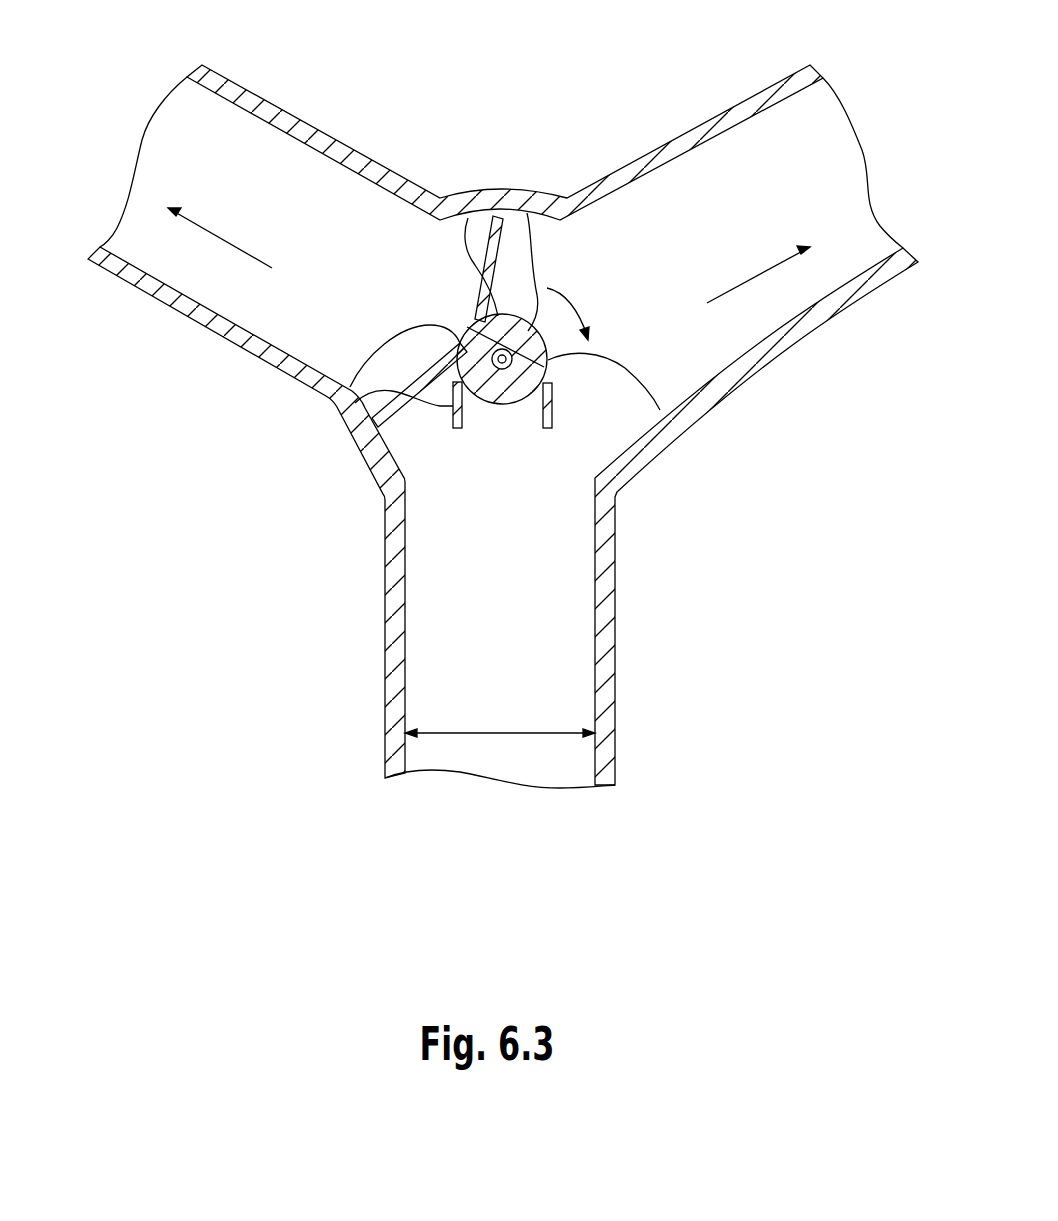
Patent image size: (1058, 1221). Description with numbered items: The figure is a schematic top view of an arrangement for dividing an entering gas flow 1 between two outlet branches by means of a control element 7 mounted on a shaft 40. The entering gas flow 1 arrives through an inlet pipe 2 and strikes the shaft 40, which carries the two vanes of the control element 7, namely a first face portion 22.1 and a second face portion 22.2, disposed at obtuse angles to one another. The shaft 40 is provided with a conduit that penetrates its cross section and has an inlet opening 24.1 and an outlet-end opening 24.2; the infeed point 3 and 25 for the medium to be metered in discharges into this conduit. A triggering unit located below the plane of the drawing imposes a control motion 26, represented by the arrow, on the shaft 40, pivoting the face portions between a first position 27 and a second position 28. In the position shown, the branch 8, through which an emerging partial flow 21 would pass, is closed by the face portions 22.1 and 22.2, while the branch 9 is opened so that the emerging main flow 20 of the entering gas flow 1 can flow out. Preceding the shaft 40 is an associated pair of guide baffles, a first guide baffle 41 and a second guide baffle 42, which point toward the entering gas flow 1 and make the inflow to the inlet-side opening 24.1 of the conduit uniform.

The entering gas flow 1 is at (513, 809).
The inlet pipe 2 is at (471, 735).
The infeed point 3 is at (541, 190).
The infeed point 25 is at (541, 190).
The control element 7 is at (452, 302).
The branch 8 is at (200, 130).
The branch 9 is at (708, 175).
The emerging main flow 20 is at (773, 270).
The emerging partial flow 21 is at (221, 242).
The first face portion 22.1 is at (372, 419).
The second face portion 22.2 is at (489, 195).
The inlet opening 24.1 is at (673, 410).
The outlet-end opening 24.2 is at (330, 403).
The control motion 26 is at (587, 280).
The first position 27 is at (596, 436).
The second position 28 is at (407, 438).
The shaft 40 is at (487, 436).
The first guide baffle 41 is at (453, 404).
The second guide baffle 42 is at (552, 403).